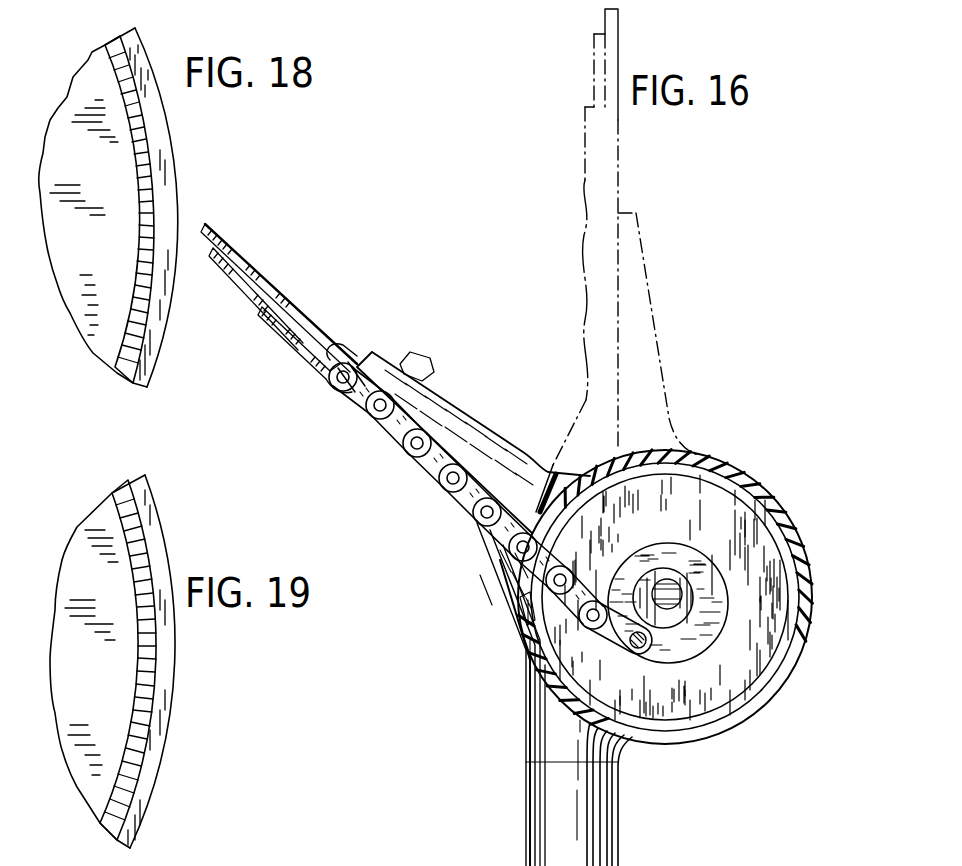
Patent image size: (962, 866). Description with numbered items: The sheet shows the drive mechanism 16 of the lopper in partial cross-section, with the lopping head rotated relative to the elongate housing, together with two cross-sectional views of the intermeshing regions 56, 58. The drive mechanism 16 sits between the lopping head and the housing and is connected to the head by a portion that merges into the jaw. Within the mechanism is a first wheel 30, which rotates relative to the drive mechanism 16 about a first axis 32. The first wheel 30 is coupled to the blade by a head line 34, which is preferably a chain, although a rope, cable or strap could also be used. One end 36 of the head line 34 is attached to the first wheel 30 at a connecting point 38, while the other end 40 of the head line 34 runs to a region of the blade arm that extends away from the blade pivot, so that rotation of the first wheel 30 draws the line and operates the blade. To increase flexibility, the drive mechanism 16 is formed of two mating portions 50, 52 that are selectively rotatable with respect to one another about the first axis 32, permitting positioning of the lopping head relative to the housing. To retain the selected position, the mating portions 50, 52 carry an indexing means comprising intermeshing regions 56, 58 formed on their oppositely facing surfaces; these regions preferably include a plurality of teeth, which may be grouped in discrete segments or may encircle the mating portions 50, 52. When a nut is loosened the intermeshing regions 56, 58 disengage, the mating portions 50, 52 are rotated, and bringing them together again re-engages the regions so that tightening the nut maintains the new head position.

In FIG. 16, the drive mechanism 16 is at (708, 452).
In FIG. 16, the first wheel 30 is at (687, 648).
In FIG. 16, the first axis 32 is at (690, 588).
In FIG. 16, the head line 34 is at (430, 468).
In FIG. 16, the one end of head line 36 is at (604, 641).
In FIG. 16, the connecting point 38 is at (628, 650).
In FIG. 16, the other end of head line 40 is at (362, 402).
In FIG. 18, the mating portion 50 is at (78, 273).
In FIG. 19, the mating portion 52 is at (77, 657).
In FIG. 18, the intermeshing region 56 is at (146, 160).
In FIG. 19, the intermeshing region 58 is at (148, 702).